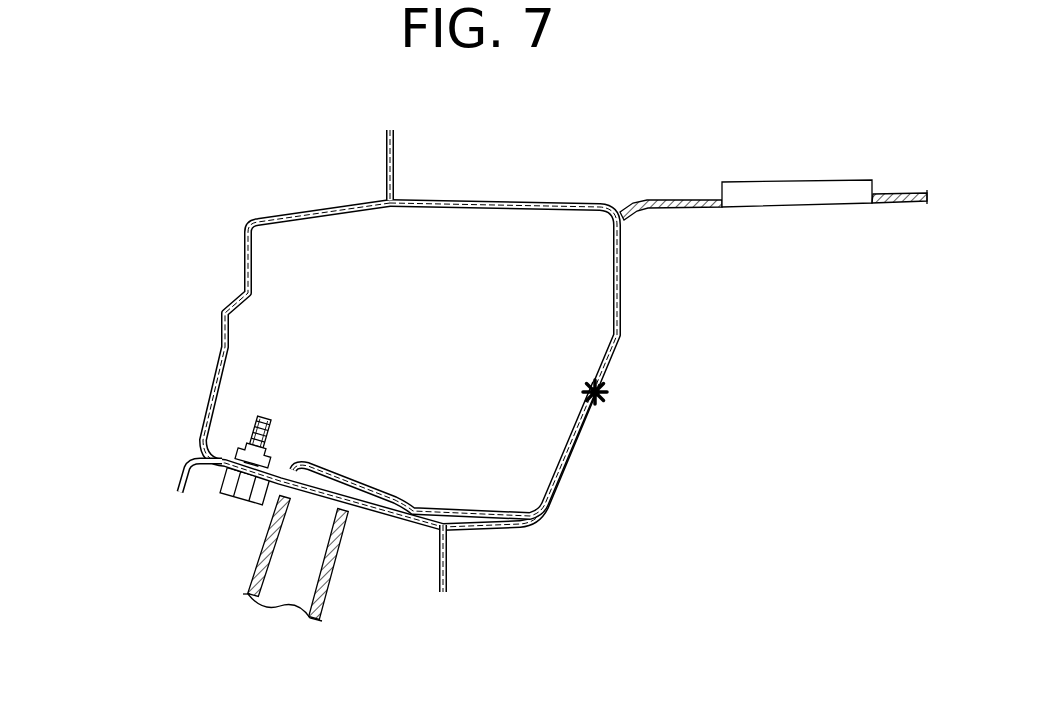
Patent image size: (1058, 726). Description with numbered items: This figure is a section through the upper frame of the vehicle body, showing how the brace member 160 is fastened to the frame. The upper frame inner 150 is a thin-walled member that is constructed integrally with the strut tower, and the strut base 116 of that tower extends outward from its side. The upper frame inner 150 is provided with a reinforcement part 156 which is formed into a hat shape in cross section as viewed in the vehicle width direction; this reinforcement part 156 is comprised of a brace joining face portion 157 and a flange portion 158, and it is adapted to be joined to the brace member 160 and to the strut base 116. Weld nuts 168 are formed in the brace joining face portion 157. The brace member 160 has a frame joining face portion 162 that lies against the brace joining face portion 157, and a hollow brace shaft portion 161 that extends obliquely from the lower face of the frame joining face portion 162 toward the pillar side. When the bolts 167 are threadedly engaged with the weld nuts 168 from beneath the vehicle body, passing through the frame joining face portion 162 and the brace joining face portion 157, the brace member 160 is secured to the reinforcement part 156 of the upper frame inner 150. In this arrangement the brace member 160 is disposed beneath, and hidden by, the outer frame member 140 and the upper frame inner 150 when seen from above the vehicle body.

The strut base 116 is at (693, 212).
The outer frame member 140 is at (254, 219).
The upper frame inner 150 is at (516, 199).
The reinforcement part 156 is at (389, 477).
The brace joining face portion 157 is at (347, 490).
The flange portion 158 is at (573, 427).
The brace member 160 is at (174, 467).
The brace shaft portion 161 is at (330, 593).
The frame joining face portion 162 is at (367, 517).
The bolts 167 is at (232, 502).
The weld nuts 168 is at (272, 452).